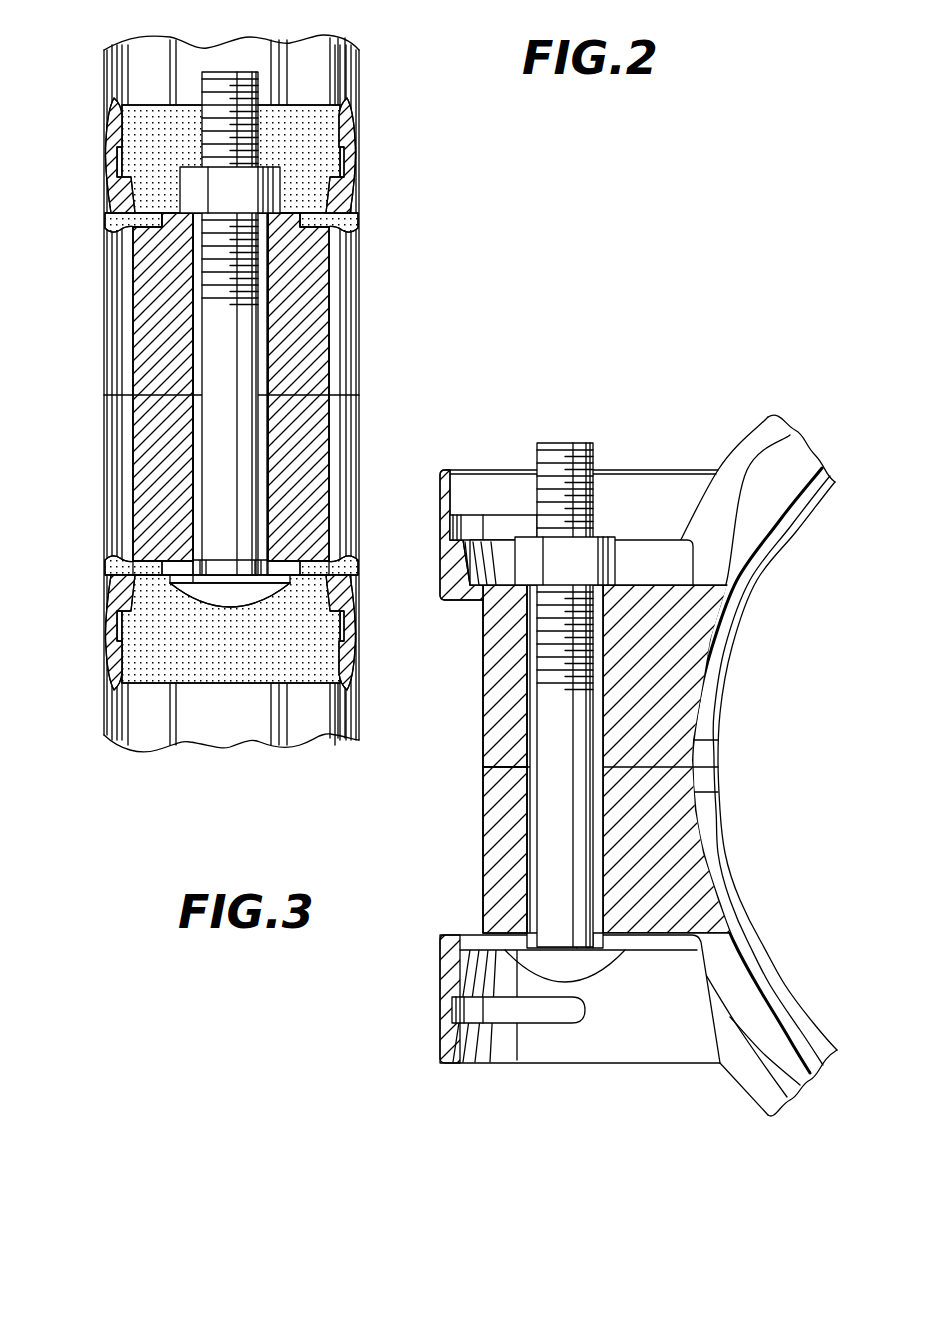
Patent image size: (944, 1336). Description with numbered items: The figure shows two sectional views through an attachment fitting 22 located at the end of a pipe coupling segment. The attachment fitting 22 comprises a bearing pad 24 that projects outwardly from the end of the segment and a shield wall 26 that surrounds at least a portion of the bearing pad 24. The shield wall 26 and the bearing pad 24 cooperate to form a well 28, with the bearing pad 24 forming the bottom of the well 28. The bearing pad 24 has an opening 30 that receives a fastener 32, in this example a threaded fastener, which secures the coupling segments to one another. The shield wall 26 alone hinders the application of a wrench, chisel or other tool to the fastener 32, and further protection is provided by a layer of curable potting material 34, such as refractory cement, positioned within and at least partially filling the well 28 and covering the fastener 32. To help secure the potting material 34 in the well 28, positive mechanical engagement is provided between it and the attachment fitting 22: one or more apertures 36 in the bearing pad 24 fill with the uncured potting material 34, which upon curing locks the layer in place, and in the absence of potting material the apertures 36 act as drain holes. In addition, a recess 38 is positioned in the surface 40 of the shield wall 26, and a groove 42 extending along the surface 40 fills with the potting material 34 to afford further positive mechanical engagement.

In FIG. 2, the attachment fitting 22 is at (108, 210).
In FIG. 3, the attachment fitting 22 is at (452, 590).
In FIG. 2, the bearing pad 24 is at (133, 268).
In FIG. 3, the bearing pad 24 is at (488, 663).
In FIG. 2, the shield wall 26 is at (345, 203).
In FIG. 3, the shield wall 26 is at (680, 462).
In FIG. 2, the well 28 is at (123, 95).
In FIG. 3, the well 28 is at (618, 482).
In FIG. 3, the opening 30 is at (502, 700).
In FIG. 3, the fastener 32 is at (537, 803).
In FIG. 2, the potting material 34 is at (313, 118).
In FIG. 2, the aperture 36 is at (313, 213).
In FIG. 2, the recess 38 is at (115, 165).
In FIG. 3, the recess 38 is at (470, 525).
In FIG. 3, the surface 40 is at (668, 537).
In FIG. 2, the groove 42 is at (343, 157).
In FIG. 3, the groove 42 is at (512, 525).